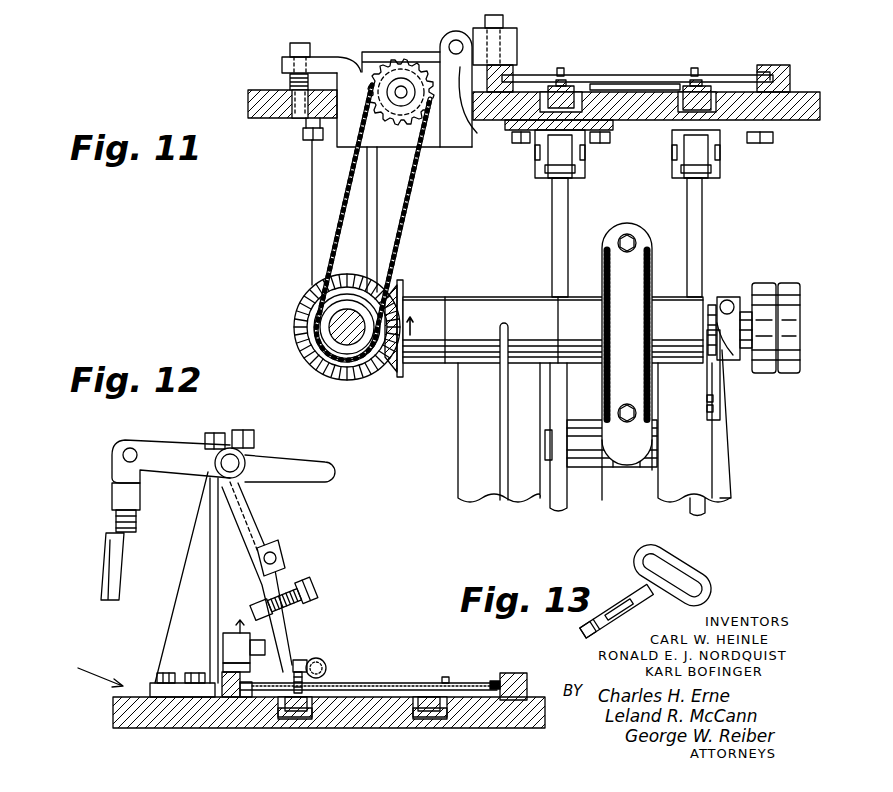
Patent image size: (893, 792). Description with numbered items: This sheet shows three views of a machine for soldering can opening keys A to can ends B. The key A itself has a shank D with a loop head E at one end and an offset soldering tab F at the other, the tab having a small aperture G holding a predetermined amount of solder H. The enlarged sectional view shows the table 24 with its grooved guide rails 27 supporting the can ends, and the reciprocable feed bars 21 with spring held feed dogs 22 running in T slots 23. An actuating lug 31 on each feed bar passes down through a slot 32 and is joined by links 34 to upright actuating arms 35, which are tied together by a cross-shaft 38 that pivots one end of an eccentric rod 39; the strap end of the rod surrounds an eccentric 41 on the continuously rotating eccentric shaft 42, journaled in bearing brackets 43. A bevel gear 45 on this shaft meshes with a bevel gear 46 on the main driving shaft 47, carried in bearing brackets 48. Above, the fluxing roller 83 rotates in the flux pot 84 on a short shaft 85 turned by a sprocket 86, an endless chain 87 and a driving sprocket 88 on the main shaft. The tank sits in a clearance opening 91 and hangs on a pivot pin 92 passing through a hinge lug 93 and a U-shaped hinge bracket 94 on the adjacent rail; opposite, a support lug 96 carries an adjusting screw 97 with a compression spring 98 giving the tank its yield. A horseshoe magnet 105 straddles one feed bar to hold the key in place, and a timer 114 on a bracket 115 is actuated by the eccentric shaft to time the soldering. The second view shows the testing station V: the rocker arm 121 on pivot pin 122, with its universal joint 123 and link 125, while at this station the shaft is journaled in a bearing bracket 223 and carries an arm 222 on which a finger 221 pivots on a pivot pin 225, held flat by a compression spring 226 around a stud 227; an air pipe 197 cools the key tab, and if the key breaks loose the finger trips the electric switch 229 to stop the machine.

In FIG. 11, the feed bars 21 is at (572, 86).
In FIG. 12, the feed bars 21 is at (298, 706).
In FIG. 11, the feed dogs 22 is at (561, 68).
In FIG. 12, the feed dogs 22 is at (300, 667).
In FIG. 11, the T slots 23 is at (742, 121).
In FIG. 12, the T slots 23 is at (285, 712).
In FIG. 11, the table 24 is at (790, 110).
In FIG. 12, the table 24 is at (508, 712).
In FIG. 11, the guide rails 27 is at (505, 68).
In FIG. 12, the guide rails 27 is at (232, 692).
In FIG. 11, the actuating lug 31 is at (563, 152).
In FIG. 11, the slot 32 is at (620, 124).
In FIG. 11, the links 34 is at (540, 166).
In FIG. 11, the actuating arms 35 is at (566, 223).
In FIG. 11, the cross-shaft 38 is at (545, 440).
In FIG. 11, the eccentric rod 39 is at (627, 456).
In FIG. 11, the eccentric 41 is at (651, 282).
In FIG. 11, the eccentric shaft 42 is at (708, 326).
In FIG. 11, the bearing brackets 43 is at (470, 458).
In FIG. 11, the bevel gear 45 is at (395, 376).
In FIG. 11, the bevel gear 46 is at (300, 312).
In FIG. 11, the main driving shaft 47 is at (335, 338).
In FIG. 11, the bearing brackets 48 is at (312, 195).
In FIG. 11, the roller 83 is at (405, 62).
In FIG. 11, the flux pot 84 is at (455, 130).
In FIG. 11, the shaft 85 is at (398, 85).
In FIG. 11, the sprocket 86 is at (404, 114).
In FIG. 11, the chain 87 is at (406, 236).
In FIG. 11, the driving sprocket 88 is at (345, 298).
In FIG. 11, the clearance opening 91 is at (298, 108).
In FIG. 11, the pivot pin 92 is at (457, 40).
In FIG. 11, the hinge lug 93 is at (477, 122).
In FIG. 11, the hinge bracket 94 is at (505, 37).
In FIG. 11, the support lug 96 is at (322, 60).
In FIG. 11, the adjusting screw 97 is at (300, 43).
In FIG. 11, the compression spring 98 is at (290, 80).
In FIG. 11, the magnet 105 is at (614, 84).
In FIG. 11, the timer 114 is at (790, 290).
In FIG. 11, the bracket 115 is at (722, 396).
In FIG. 12, the rocker arm 121 is at (175, 455).
In FIG. 12, the pivot pin 122 is at (236, 463).
In FIG. 12, the universal joint 123 is at (331, 466).
In FIG. 12, the link 125 is at (110, 560).
In FIG. 12, the air pipe 197 is at (320, 660).
In FIG. 12, the finger 221 is at (302, 647).
In FIG. 12, the arm 222 is at (261, 541).
In FIG. 12, the bearing bracket 223 is at (178, 593).
In FIG. 12, the pivot pin 225 is at (284, 561).
In FIG. 12, the compression spring 226 is at (295, 591).
In FIG. 12, the stud 227 is at (317, 598).
In FIG. 12, the electric switch 229 is at (225, 648).
In FIG. 12, the key A is at (316, 680).
In FIG. 13, the key A is at (640, 588).
In FIG. 11, the can end B is at (640, 76).
In FIG. 12, the can end B is at (360, 683).
In FIG. 12, the testing station V is at (91, 671).
In FIG. 13, the shank D is at (640, 600).
In FIG. 13, the loop head E is at (712, 580).
In FIG. 13, the soldering tab F is at (590, 633).
In FIG. 13, the aperture G is at (592, 640).
In FIG. 13, the solder H is at (600, 626).